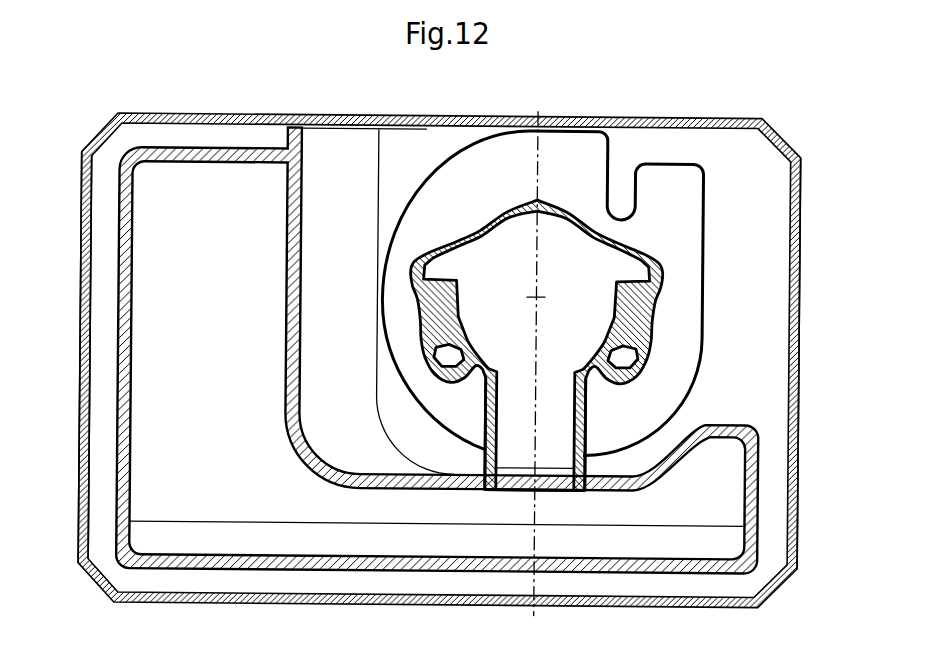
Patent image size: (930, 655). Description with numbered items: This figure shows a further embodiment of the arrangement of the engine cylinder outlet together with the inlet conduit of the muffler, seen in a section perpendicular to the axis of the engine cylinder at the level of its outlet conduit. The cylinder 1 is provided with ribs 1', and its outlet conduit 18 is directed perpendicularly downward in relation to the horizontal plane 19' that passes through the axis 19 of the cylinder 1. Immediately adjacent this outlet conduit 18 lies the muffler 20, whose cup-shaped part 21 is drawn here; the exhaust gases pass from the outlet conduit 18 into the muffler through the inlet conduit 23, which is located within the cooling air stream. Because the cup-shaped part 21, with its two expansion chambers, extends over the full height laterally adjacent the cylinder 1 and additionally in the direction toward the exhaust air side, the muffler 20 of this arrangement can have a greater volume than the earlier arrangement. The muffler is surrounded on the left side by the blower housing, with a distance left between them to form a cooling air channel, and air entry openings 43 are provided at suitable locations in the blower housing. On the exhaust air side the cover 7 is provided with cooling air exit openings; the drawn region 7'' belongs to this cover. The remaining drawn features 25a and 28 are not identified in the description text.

The cylinder 1 is at (536, 333).
The ribs 1' is at (542, 266).
The cover 7 is at (440, 339).
The outer frame side wall 7'' is at (817, 363).
The outlet conduit 18 is at (577, 408).
The axis 19 is at (525, 280).
The horizontal plane 19' is at (553, 363).
The muffler 20 is at (219, 476).
The cup-shaped part 21 is at (753, 482).
The inlet conduit 23 is at (577, 480).
The gap region 25a is at (397, 192).
The frame side 28 is at (86, 356).
The air entry openings 43 is at (103, 128).